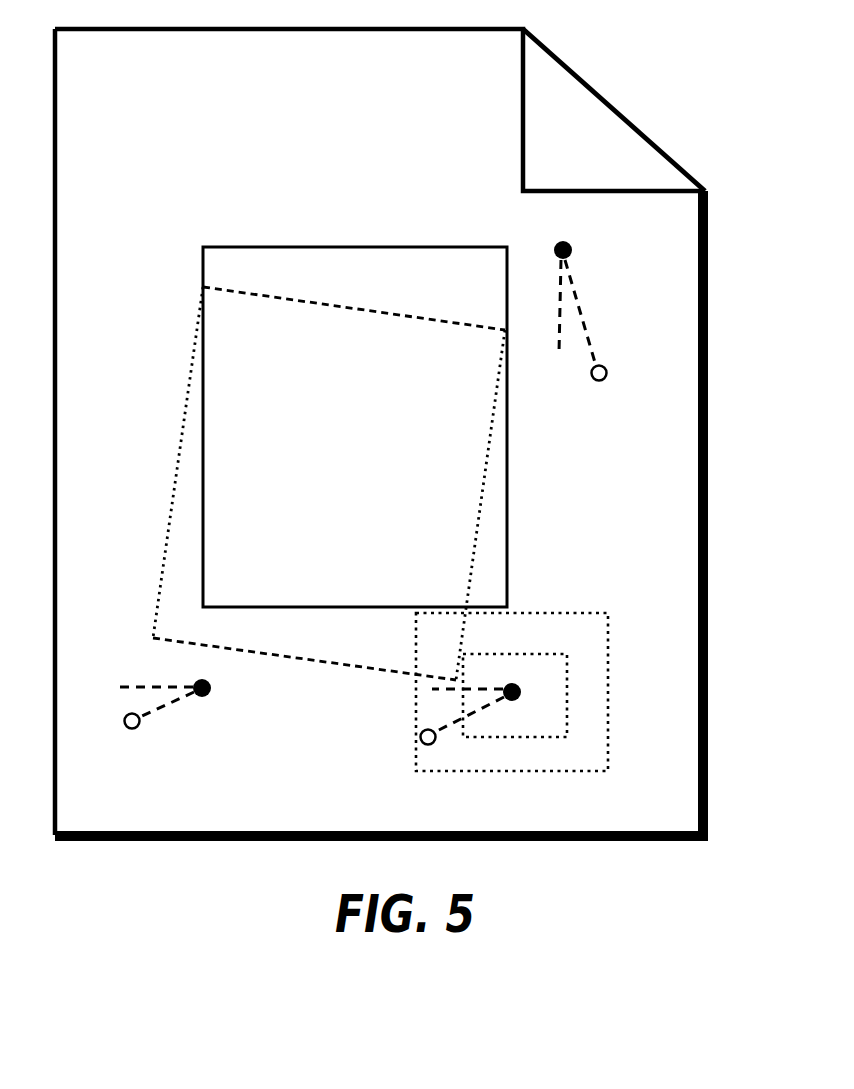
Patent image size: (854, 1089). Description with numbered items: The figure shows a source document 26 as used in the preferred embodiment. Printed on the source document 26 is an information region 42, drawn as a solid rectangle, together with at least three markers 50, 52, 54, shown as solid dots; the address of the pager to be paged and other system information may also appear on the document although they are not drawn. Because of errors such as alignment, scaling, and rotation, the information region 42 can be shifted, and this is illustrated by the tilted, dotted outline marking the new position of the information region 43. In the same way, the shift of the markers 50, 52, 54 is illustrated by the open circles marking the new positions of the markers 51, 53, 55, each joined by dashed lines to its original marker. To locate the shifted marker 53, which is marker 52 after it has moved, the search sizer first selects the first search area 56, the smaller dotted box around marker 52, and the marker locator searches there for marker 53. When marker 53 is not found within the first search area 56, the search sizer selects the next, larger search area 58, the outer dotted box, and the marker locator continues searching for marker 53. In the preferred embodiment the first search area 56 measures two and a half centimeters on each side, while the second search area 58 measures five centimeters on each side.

The source document 26 is at (712, 278).
The information region 42 is at (507, 420).
The new position of the information region 43 is at (183, 425).
The marker 50 is at (190, 693).
The new position of marker 51 is at (124, 732).
The marker 52 is at (520, 696).
The new position of marker 53 is at (417, 739).
The marker 54 is at (560, 240).
The new position of marker 55 is at (607, 380).
The first search area 56 is at (548, 653).
The second search area 58 is at (542, 615).